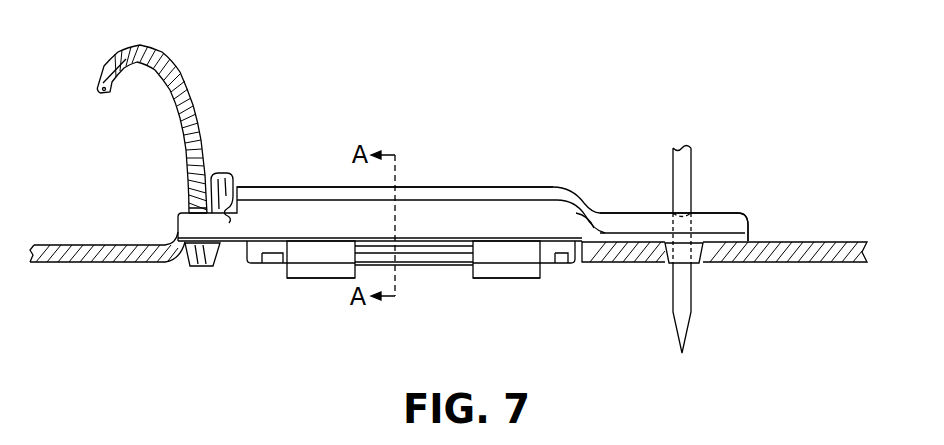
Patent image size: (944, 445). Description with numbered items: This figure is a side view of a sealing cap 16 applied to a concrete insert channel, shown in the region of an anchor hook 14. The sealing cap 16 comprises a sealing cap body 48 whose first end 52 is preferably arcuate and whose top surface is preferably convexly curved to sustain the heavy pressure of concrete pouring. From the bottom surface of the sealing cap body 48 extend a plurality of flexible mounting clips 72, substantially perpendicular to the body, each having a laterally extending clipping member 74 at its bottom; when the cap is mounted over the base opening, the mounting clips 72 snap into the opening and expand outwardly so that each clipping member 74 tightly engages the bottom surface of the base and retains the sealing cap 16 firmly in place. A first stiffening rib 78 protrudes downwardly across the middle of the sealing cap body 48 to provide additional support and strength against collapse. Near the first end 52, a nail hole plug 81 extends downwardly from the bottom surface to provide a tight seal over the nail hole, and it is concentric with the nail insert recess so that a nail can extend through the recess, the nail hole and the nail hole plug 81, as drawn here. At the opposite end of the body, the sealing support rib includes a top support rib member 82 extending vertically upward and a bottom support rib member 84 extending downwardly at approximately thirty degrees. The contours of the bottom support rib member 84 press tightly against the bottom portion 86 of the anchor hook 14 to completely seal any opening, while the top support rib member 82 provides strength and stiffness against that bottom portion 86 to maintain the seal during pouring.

The anchor hook 14 is at (174, 83).
The sealing cap 16 is at (423, 159).
The sealing cap body 48 is at (472, 193).
The first end 52 is at (743, 227).
The flexible mounting clip 72 is at (302, 263).
The clipping member 74 is at (327, 273).
The first stiffening rib 78 is at (430, 262).
The nail hole plug 81 is at (703, 263).
The top support rib member 82 is at (217, 171).
The bottom support rib member 84 is at (203, 265).
The bottom portion 86 is at (193, 196).